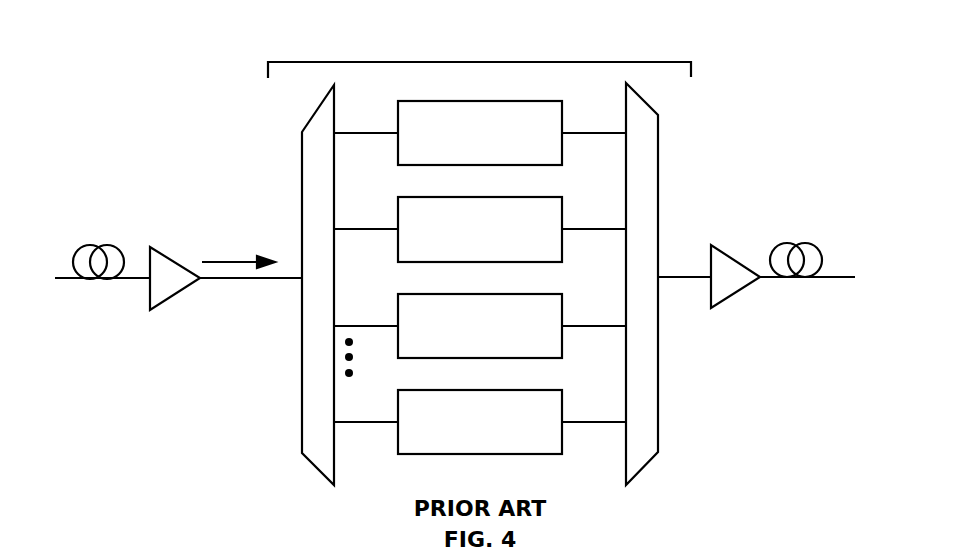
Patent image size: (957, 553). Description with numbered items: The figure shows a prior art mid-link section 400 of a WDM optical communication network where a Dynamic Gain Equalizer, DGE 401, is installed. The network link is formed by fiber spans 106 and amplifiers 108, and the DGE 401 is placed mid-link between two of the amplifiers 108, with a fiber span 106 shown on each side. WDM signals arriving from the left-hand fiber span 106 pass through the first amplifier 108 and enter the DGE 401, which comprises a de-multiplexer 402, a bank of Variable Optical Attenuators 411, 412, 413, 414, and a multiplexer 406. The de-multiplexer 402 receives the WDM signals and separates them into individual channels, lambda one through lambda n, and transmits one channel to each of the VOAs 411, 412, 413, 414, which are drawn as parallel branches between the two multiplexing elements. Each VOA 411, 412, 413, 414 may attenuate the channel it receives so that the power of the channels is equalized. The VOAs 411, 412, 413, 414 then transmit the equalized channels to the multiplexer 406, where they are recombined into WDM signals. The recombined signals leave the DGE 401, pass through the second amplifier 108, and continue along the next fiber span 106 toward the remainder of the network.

The mid-link section 400 is at (160, 410).
The Dynamic Gain Equalizer (DGE) 401 is at (476, 266).
The de-multiplexer 402 is at (308, 465).
The multiplexer 406 is at (642, 467).
The Variable Optical Attenuator (VOA) 411 is at (480, 133).
The Variable Optical Attenuator (VOA) 412 is at (480, 229).
The Variable Optical Attenuator (VOA) 413 is at (480, 326).
The Variable Optical Attenuator (VOA) 414 is at (480, 422).
The fiber span 106 is at (98, 245).
The amplifier 108 is at (170, 298).